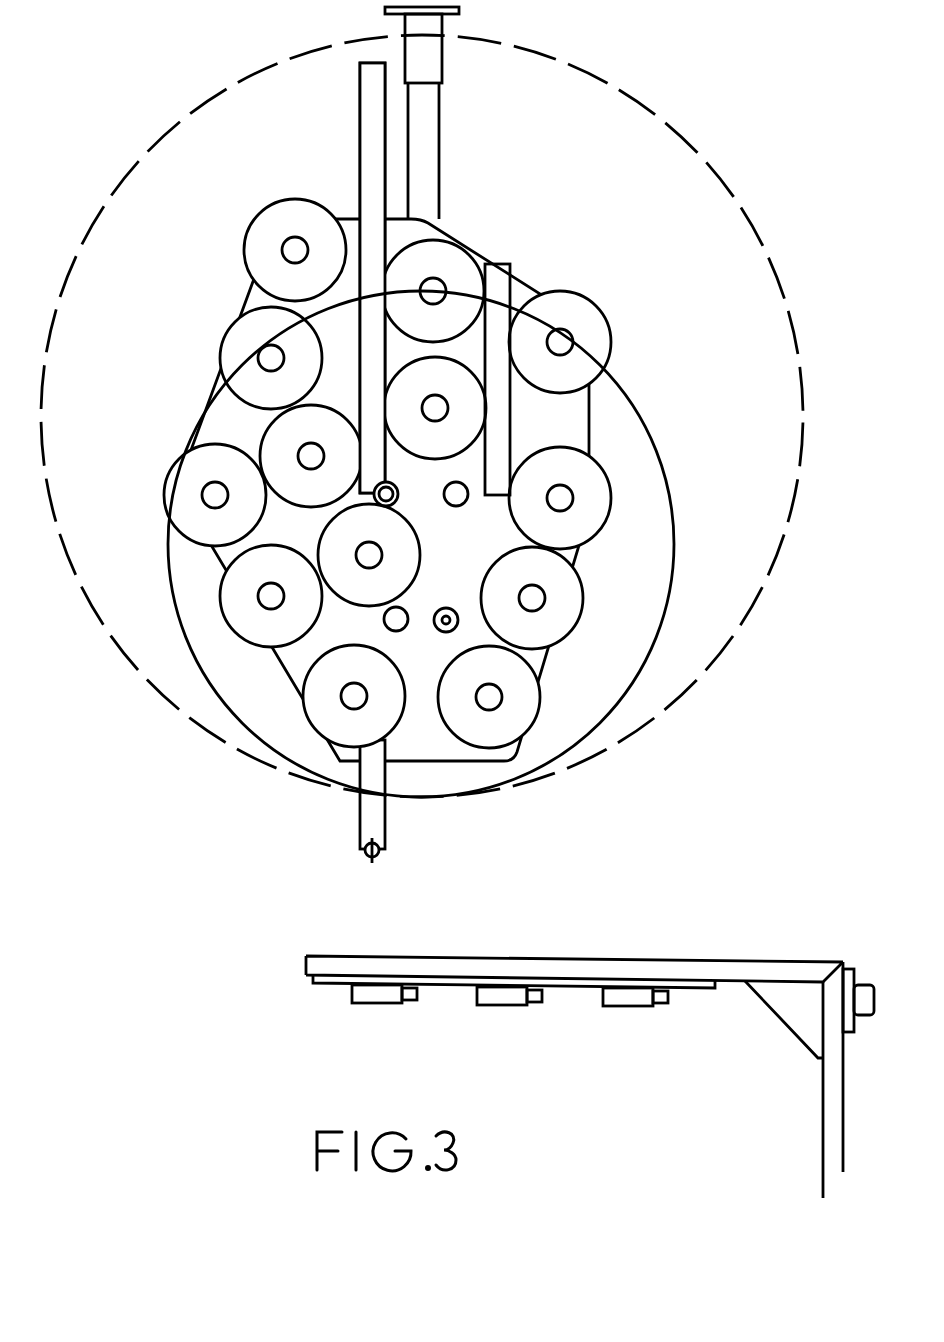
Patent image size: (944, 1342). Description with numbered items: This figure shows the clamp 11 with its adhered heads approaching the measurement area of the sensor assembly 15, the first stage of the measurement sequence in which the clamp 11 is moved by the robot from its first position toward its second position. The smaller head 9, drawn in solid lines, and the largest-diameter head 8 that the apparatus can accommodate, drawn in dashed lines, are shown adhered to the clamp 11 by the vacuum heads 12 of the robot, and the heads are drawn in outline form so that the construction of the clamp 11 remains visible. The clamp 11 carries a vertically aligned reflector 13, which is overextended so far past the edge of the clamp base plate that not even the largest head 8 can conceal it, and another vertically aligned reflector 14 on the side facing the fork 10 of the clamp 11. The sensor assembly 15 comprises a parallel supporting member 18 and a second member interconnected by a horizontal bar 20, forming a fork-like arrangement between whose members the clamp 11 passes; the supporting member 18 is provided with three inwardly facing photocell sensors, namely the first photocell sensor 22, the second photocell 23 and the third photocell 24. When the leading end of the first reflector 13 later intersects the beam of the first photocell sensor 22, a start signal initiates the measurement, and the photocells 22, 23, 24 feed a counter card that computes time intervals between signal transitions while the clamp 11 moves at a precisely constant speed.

The head 8 is at (794, 447).
The head 9 is at (648, 453).
The fork 10 is at (436, 164).
The clamp 11 is at (220, 417).
The vacuum head 12 is at (596, 305).
The vertically aligned reflector 13 is at (358, 822).
The vertically aligned reflector 14 is at (505, 279).
The sensor assembly 15 is at (828, 1115).
The supporting member 18 is at (538, 960).
The horizontal bar 20 is at (863, 985).
The first photocell sensor 22 is at (387, 1003).
The second photocell 23 is at (515, 1005).
The third photocell 24 is at (642, 1006).